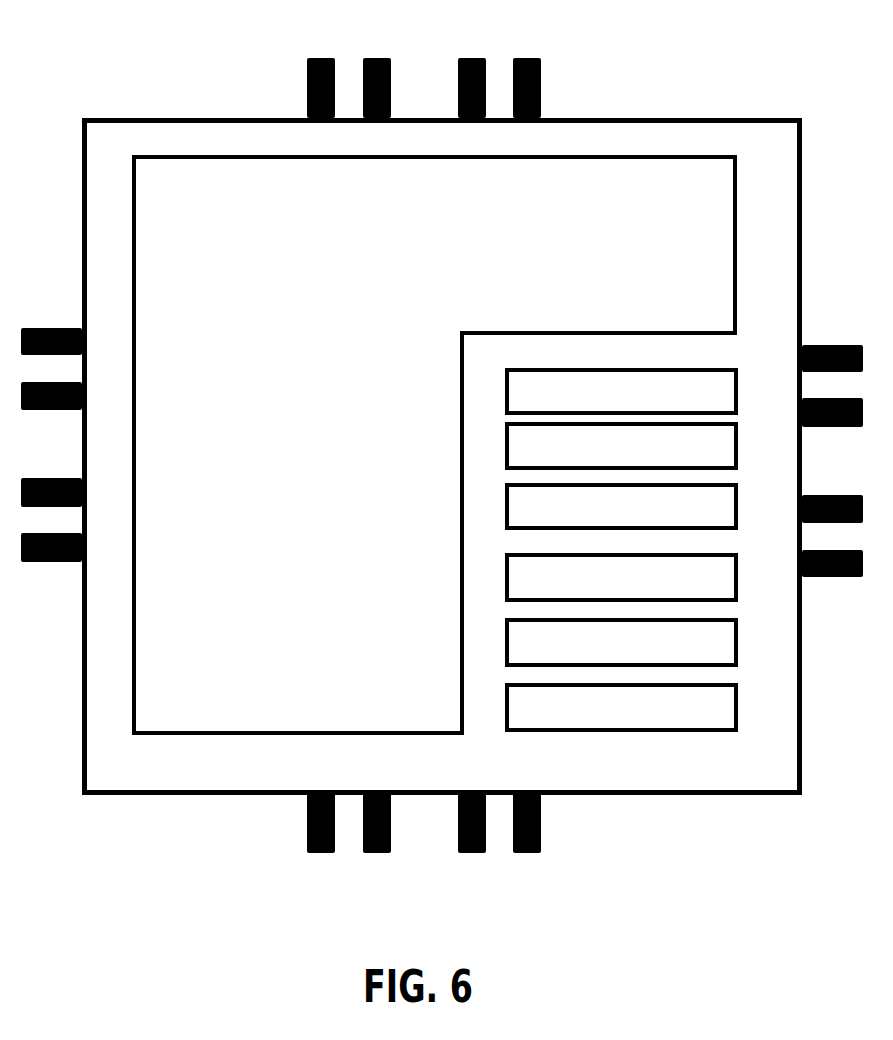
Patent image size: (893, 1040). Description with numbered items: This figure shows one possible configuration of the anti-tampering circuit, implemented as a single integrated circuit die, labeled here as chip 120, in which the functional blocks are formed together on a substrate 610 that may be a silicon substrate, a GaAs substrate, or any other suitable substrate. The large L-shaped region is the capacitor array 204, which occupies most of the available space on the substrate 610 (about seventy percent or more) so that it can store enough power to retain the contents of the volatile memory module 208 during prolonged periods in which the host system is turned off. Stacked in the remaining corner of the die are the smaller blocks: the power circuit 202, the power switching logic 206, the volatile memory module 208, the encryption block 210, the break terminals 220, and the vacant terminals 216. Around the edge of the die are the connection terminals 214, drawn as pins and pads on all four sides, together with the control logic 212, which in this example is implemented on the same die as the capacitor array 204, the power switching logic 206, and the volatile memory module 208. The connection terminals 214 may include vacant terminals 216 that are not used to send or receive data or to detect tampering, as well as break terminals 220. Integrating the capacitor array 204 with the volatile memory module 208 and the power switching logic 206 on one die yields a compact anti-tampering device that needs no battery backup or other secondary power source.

The integrated circuit chip 120 is at (117, 100).
The substrate 610 is at (768, 222).
The capacitor array 204 is at (297, 371).
The power circuit 202 is at (601, 402).
The power switching logic 206 is at (601, 457).
The volatile memory module 208 is at (601, 517).
The encryption block 210 is at (601, 588).
The break terminals 220 is at (601, 653).
The vacant terminals 216 is at (601, 718).
The control logic 212 is at (316, 58).
The connection terminals 214 is at (472, 58).